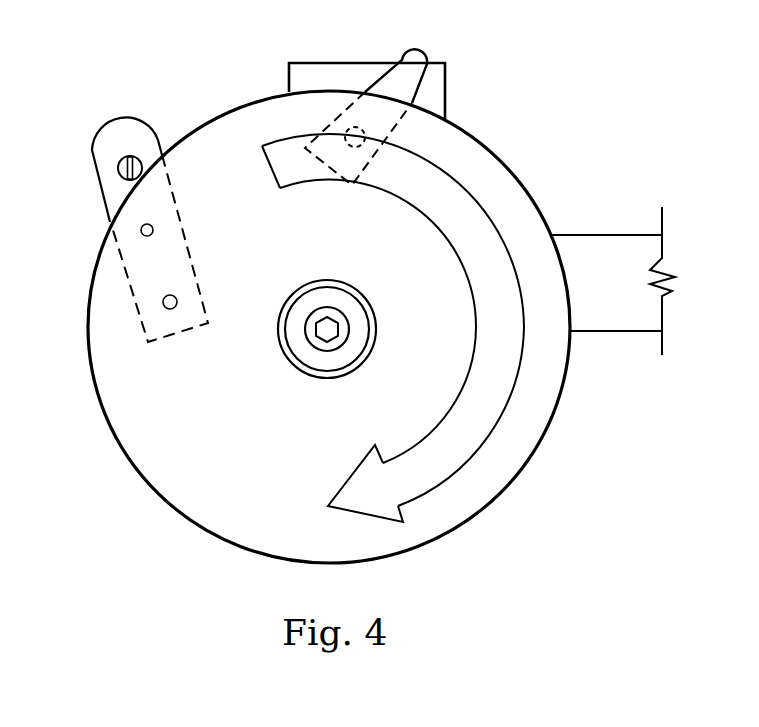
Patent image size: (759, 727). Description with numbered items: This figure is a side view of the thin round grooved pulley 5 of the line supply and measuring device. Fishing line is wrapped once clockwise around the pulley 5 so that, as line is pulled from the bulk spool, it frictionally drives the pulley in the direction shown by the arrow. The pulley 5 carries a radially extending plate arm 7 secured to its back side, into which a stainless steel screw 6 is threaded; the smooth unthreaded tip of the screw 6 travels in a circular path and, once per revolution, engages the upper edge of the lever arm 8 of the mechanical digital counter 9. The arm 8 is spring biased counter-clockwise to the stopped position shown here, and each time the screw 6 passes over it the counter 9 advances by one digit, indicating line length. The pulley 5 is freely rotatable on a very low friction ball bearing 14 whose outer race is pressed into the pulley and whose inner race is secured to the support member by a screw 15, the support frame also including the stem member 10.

The pulley 5 is at (522, 215).
The screw 6 is at (118, 172).
The plate arm 7 is at (135, 130).
The lever arm 8 is at (417, 67).
The mechanical digital counter 9 is at (323, 75).
The stem member 10 is at (603, 307).
The ball bearing 14 is at (342, 363).
The screw 15 is at (323, 335).